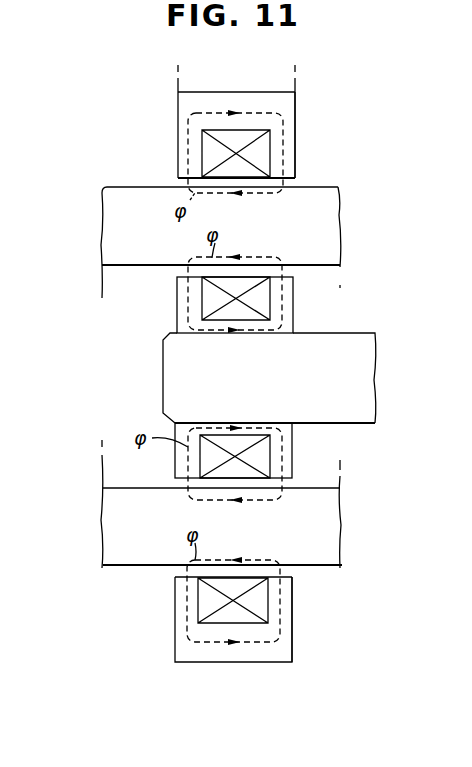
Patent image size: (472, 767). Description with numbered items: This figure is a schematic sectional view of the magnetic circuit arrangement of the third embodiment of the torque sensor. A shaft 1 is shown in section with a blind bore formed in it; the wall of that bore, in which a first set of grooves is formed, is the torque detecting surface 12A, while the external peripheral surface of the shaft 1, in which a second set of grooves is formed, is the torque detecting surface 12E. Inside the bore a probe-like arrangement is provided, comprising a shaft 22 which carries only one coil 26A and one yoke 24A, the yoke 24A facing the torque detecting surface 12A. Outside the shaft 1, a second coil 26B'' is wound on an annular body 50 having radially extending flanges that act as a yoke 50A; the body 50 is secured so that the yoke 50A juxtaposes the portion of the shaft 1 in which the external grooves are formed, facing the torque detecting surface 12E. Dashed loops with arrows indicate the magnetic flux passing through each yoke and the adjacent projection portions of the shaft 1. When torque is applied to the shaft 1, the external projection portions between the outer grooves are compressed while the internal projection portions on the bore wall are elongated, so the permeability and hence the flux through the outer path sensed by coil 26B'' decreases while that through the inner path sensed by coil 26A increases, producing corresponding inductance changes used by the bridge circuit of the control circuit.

The shaft 1 is at (110, 207).
The torque detecting surface 12E is at (187, 183).
The torque detecting surface 12A is at (177, 267).
The shaft 22 is at (358, 427).
The yoke 24A is at (288, 307).
The coil 26A is at (207, 303).
The annular body 50 is at (178, 98).
The yoke 50A is at (287, 157).
The second coil 26B'' is at (187, 383).